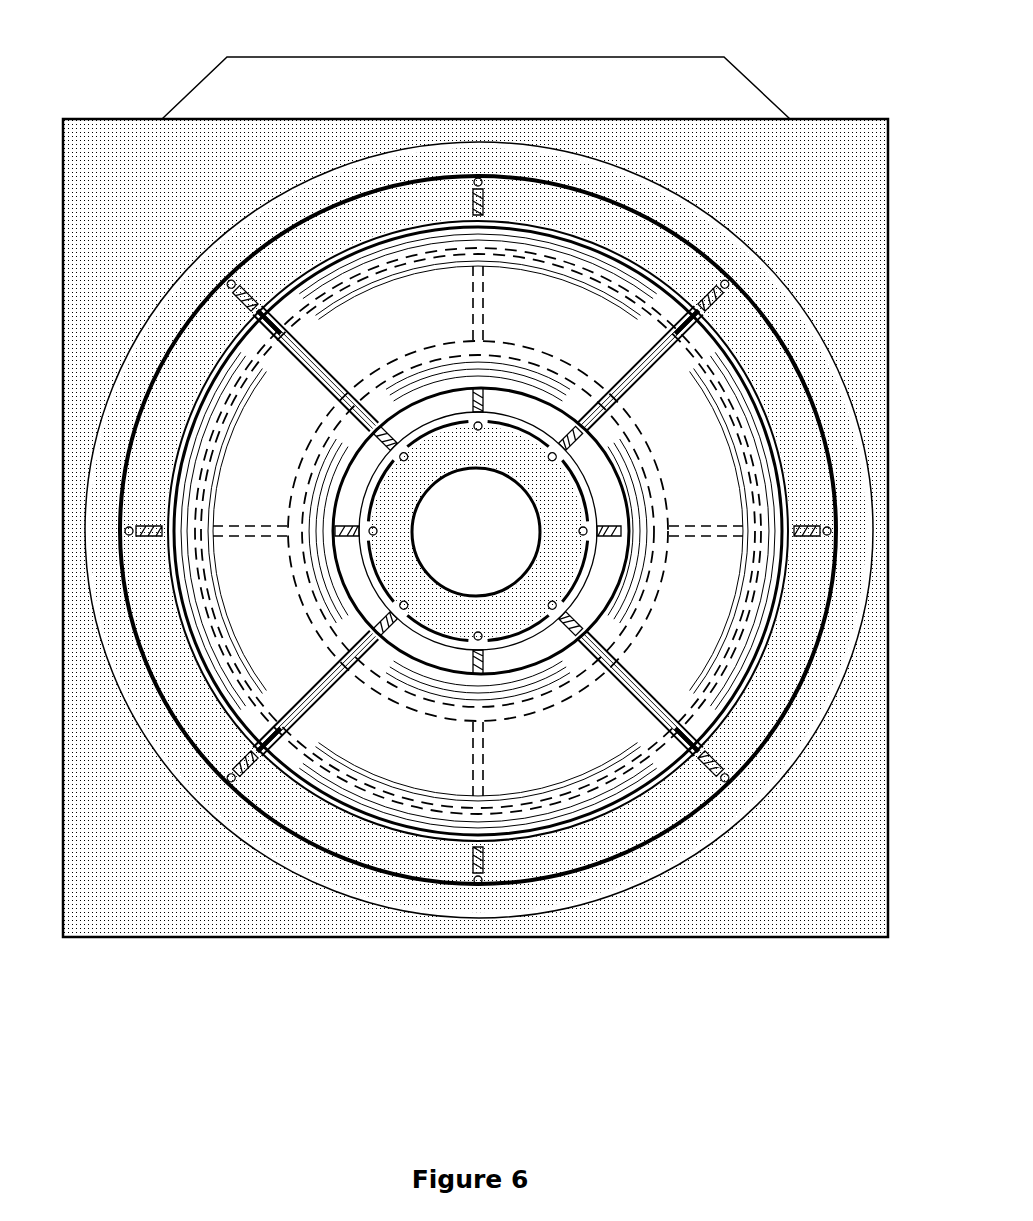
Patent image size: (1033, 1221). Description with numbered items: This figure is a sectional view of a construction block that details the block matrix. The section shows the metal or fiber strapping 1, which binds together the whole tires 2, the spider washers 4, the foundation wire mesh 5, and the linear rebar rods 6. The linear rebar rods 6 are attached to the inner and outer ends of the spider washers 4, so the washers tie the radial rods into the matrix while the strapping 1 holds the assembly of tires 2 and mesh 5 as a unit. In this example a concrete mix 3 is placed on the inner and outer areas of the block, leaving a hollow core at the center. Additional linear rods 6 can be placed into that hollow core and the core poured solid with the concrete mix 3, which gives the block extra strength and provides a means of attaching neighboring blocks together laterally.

The metal or fiber strapping 1 is at (312, 341).
The whole tires 2 is at (562, 295).
The concrete mix 3 is at (612, 495).
The spider washers 4 is at (689, 552).
The foundation wire mesh 5 is at (517, 667).
The linear rebar rods 6 is at (393, 622).